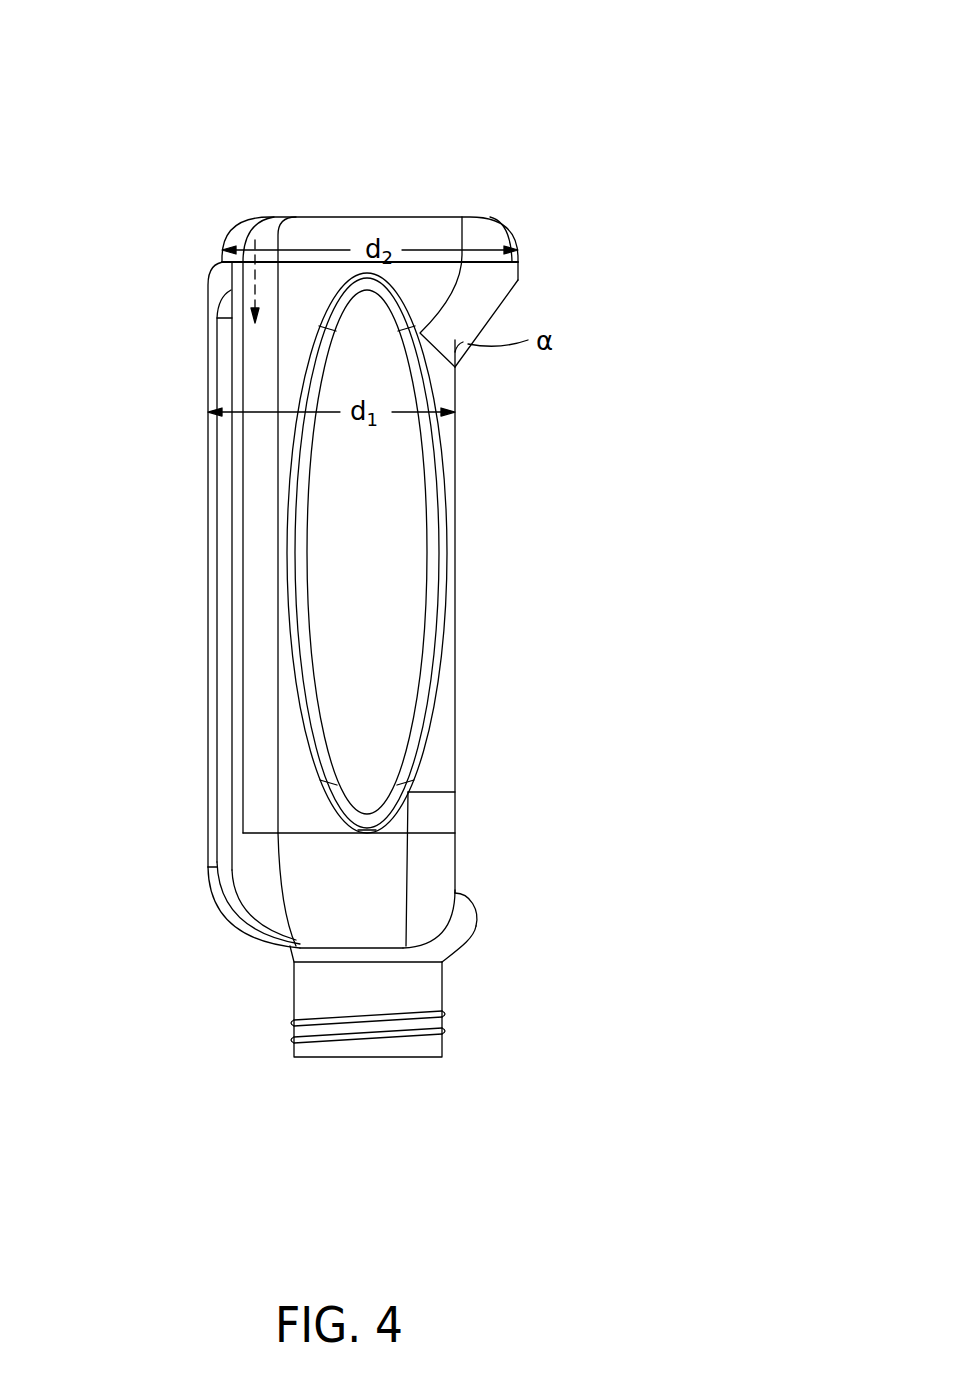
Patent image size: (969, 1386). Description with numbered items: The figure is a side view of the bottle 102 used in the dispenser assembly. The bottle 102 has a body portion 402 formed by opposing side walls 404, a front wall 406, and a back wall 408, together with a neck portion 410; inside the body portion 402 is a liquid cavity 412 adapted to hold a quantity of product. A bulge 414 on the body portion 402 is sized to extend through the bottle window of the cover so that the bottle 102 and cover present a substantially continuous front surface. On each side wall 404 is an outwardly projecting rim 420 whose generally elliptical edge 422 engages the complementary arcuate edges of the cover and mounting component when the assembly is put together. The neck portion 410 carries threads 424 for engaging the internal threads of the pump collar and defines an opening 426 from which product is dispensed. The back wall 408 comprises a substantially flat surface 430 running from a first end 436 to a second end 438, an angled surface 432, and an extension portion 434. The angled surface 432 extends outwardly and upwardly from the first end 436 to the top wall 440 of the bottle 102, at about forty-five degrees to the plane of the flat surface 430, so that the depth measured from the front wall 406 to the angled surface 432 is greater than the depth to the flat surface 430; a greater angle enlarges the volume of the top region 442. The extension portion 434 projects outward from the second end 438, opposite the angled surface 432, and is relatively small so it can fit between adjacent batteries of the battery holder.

The bottle 102 is at (571, 76).
The body portion 402 is at (448, 547).
The side walls 404 is at (371, 886).
The front wall 406 is at (208, 400).
The back wall 408 is at (456, 812).
The neck portion 410 is at (302, 1068).
The cavity 412 is at (250, 217).
The bulge 414 is at (217, 712).
The outwardly projecting rim 420 is at (388, 571).
The generally elliptical edge 422 is at (447, 607).
The threads 424 is at (292, 1040).
The opening 426 is at (376, 1080).
The flat surface 430 is at (456, 570).
The angled surface 432 is at (482, 295).
The extension portion 434 is at (475, 920).
The first end 436 is at (433, 372).
The second end 438 is at (456, 892).
The top wall 440 is at (398, 217).
The top region 442 is at (306, 226).